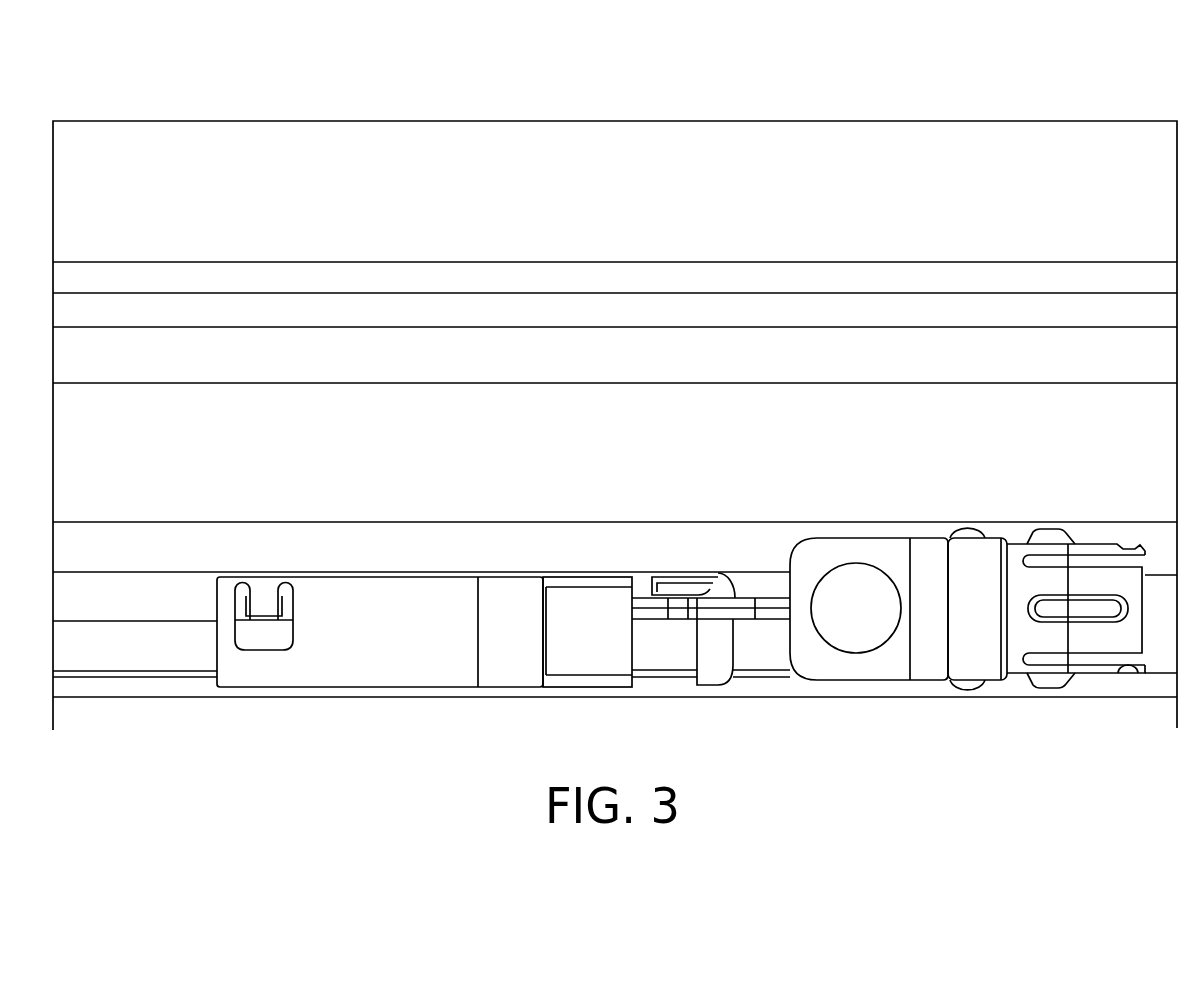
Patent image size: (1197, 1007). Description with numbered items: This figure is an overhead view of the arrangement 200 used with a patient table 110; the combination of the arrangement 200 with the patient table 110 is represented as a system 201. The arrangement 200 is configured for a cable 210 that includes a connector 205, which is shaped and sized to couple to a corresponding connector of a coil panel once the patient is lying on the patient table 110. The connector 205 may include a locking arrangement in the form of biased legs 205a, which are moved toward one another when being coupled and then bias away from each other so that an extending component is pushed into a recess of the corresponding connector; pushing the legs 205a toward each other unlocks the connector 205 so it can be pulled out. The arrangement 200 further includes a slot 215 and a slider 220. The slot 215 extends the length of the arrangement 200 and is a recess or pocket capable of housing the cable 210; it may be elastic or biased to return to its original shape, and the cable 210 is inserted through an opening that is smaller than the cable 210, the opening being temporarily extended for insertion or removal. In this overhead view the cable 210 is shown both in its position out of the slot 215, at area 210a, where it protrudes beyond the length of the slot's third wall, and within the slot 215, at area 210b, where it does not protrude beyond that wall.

The patient table 110 is at (716, 153).
The system 201 is at (1098, 153).
The arrangement 200 is at (886, 444).
The connector 205 is at (928, 668).
The biased legs 205a is at (1065, 540).
The cable 210 is at (742, 613).
The area where cable is out of slot 210a is at (710, 603).
The area where cable is within slot 210b is at (95, 662).
The slot 215 is at (170, 662).
The slider 220 is at (507, 668).